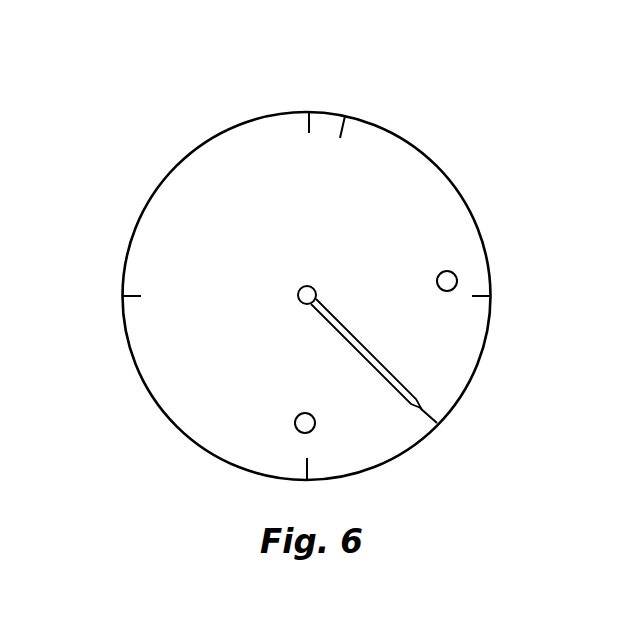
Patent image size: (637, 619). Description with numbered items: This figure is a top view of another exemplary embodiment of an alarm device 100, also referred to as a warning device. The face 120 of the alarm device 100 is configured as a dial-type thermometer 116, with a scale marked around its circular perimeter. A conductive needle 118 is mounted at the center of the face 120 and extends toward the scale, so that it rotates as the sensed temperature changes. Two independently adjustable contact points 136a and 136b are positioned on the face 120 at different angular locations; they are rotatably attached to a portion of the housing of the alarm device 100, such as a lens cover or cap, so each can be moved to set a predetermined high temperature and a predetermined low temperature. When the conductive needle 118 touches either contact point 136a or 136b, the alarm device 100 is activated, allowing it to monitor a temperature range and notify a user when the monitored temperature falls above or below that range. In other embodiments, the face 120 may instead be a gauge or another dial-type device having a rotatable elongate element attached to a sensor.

The alarm device 100 is at (304, 250).
The dial-type thermometer 116 is at (304, 296).
The face 120 is at (445, 222).
The conductive needle 118 is at (382, 360).
The contact point 136a is at (438, 272).
The contact point 136b is at (293, 420).